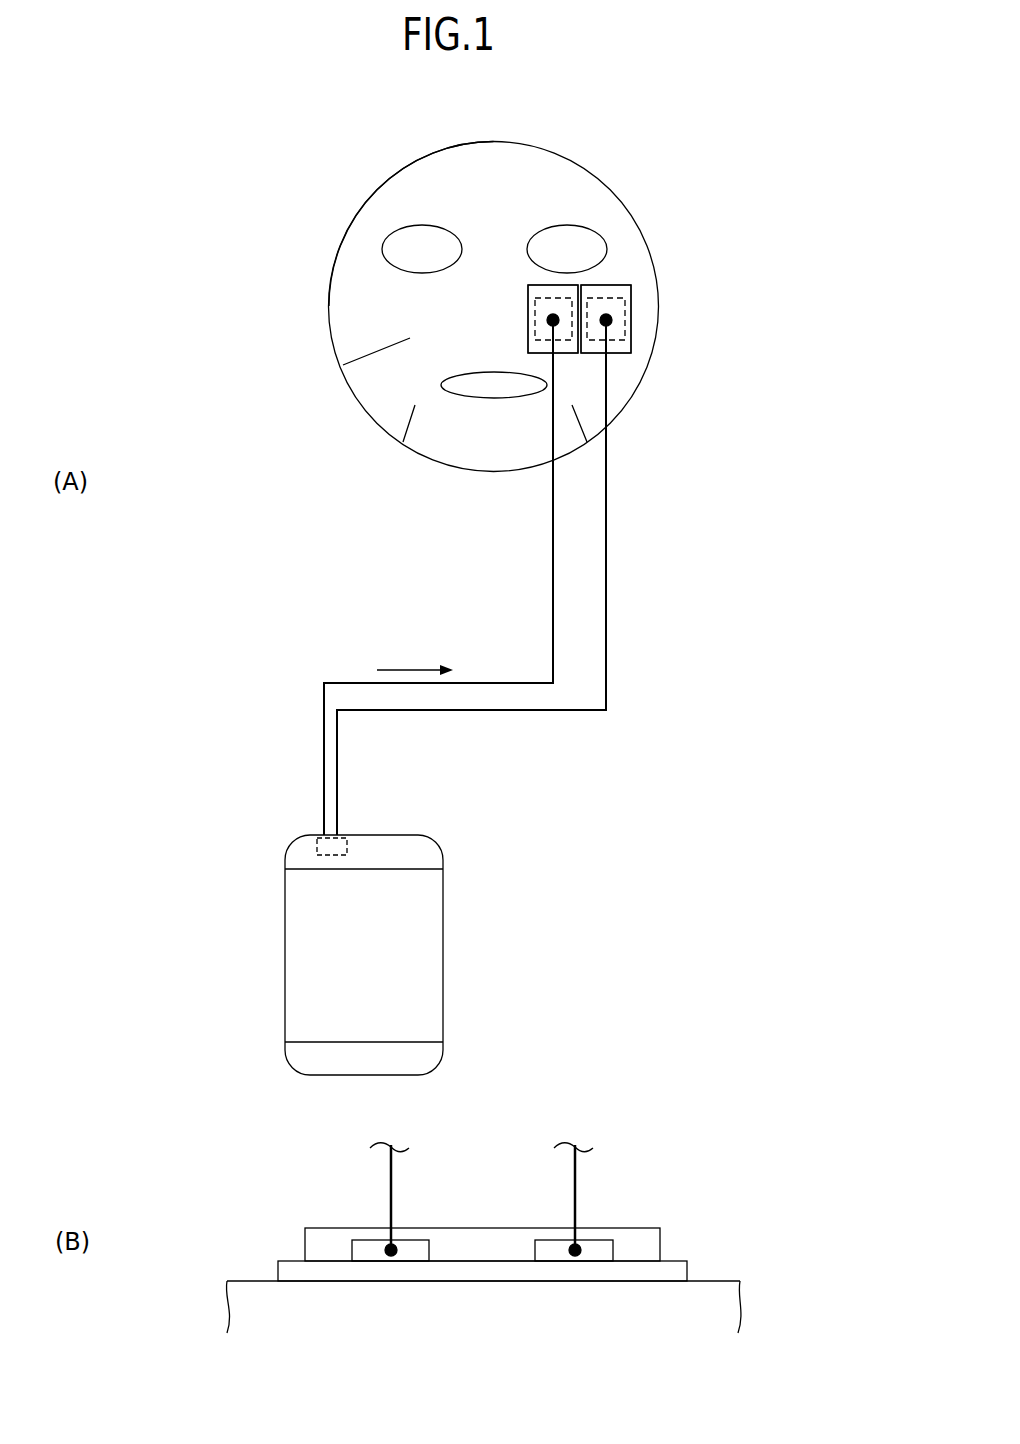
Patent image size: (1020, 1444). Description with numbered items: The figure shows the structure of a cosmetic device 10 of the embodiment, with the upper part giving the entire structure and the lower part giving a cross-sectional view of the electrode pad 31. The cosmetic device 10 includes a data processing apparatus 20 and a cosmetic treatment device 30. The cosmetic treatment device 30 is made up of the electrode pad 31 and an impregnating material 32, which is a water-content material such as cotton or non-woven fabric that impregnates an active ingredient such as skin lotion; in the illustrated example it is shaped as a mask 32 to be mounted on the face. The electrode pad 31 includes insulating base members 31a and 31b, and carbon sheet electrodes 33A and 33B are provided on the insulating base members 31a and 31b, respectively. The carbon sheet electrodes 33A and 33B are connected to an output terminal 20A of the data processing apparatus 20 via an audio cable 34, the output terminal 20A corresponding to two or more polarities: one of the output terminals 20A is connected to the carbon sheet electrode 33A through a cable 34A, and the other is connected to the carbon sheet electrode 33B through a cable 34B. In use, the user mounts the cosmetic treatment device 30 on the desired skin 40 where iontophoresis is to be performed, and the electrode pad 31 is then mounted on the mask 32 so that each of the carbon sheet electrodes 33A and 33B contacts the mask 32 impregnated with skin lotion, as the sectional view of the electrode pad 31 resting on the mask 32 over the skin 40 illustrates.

The cosmetic device 10 is at (379, 107).
The cosmetic treatment device 30 is at (578, 138).
The impregnating material (mask) 32 is at (383, 185).
The electrode pad 31 is at (616, 277).
The insulating base member 31a is at (563, 347).
The insulating base member 31b is at (618, 347).
The carbon sheet electrode 33A is at (533, 325).
The carbon sheet electrode 33B is at (617, 308).
The cable 34A is at (554, 595).
The cable 34B is at (607, 560).
The audio cable 34 is at (698, 543).
The data processing apparatus 20 is at (452, 927).
The output terminal 20A is at (348, 838).
The skin 40 is at (723, 1307).